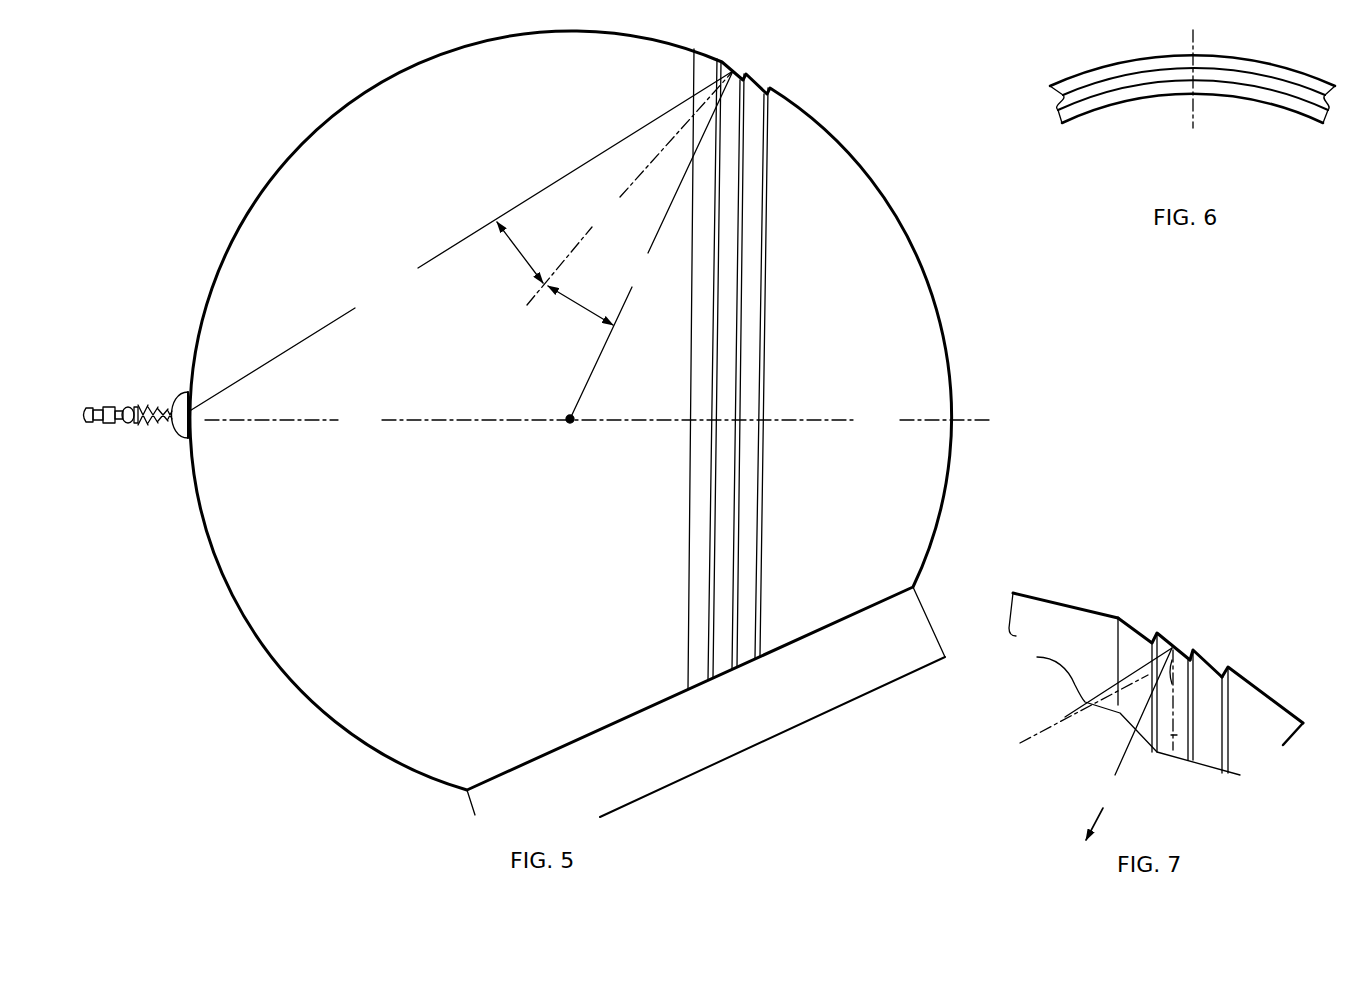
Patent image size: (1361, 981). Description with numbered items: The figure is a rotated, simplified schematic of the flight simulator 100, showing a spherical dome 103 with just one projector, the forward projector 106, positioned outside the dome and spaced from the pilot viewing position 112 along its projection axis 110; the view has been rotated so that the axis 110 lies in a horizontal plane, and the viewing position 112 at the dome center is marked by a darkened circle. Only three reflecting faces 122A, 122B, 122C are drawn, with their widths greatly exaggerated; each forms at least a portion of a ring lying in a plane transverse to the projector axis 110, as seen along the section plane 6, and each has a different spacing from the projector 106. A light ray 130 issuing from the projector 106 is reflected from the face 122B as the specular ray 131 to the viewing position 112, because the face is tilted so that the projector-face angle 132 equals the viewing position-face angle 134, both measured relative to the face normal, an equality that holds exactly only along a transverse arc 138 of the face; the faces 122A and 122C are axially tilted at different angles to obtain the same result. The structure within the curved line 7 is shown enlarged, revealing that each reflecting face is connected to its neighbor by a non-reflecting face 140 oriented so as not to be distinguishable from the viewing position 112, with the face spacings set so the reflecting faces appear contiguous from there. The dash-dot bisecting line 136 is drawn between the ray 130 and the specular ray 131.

In FIG. 5, the flight simulator 100 is at (533, 424).
In FIG. 5, the spherical dome 103 is at (230, 603).
In FIG. 5, the forward projector 106 is at (142, 425).
In FIG. 5, the projection axis 110 is at (597, 420).
In FIG. 5, the pilot viewing position 112 is at (568, 423).
In FIG. 5, the reflecting face 122A is at (697, 78).
In FIG. 6, the reflecting face 122A is at (1072, 105).
In FIG. 7, the reflecting face 122A is at (1120, 642).
In FIG. 5, the reflecting face 122B is at (742, 80).
In FIG. 6, the reflecting face 122B is at (1143, 88).
In FIG. 7, the reflecting face 122B is at (1210, 680).
In FIG. 5, the reflecting face 122C is at (766, 93).
In FIG. 6, the reflecting face 122C is at (1312, 112).
In FIG. 7, the reflecting face 122C is at (1230, 684).
In FIG. 5, the light ray 130 is at (460, 241).
In FIG. 7, the light ray 130 is at (1097, 693).
In FIG. 5, the specular ray 131 is at (651, 245).
In FIG. 7, the specular ray 131 is at (1128, 727).
In FIG. 5, the projector-face angle 132 is at (520, 252).
In FIG. 5, the viewing position-face angle 134 is at (580, 305).
In FIG. 5, the bisecting line 136 is at (630, 188).
In FIG. 7, the bisecting line 136 is at (1096, 715).
In FIG. 7, the transverse arc 138 is at (1177, 737).
In FIG. 7, the non-reflecting face 140 is at (1175, 672).
In FIG. 5, the plane 6— 6 is at (646, 25).
In FIG. 5, the curved line 7 is at (804, 63).